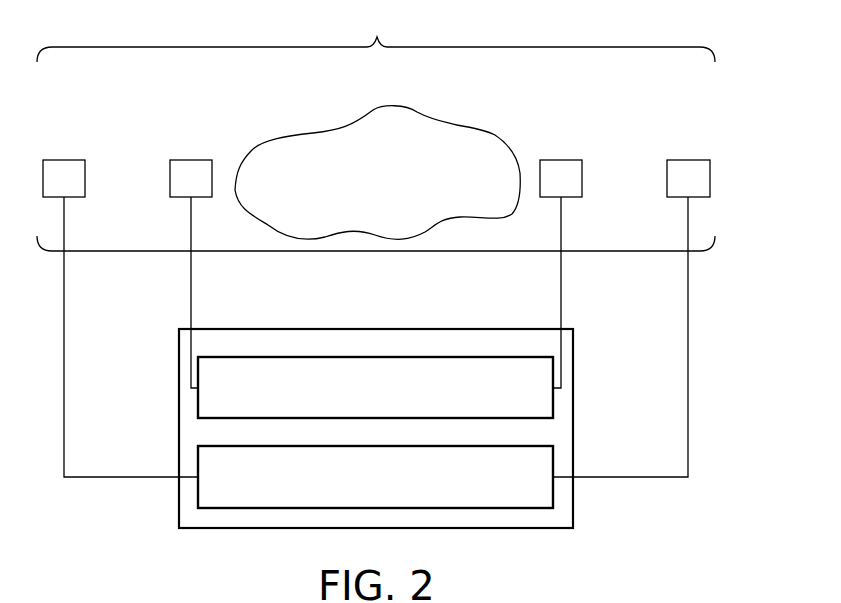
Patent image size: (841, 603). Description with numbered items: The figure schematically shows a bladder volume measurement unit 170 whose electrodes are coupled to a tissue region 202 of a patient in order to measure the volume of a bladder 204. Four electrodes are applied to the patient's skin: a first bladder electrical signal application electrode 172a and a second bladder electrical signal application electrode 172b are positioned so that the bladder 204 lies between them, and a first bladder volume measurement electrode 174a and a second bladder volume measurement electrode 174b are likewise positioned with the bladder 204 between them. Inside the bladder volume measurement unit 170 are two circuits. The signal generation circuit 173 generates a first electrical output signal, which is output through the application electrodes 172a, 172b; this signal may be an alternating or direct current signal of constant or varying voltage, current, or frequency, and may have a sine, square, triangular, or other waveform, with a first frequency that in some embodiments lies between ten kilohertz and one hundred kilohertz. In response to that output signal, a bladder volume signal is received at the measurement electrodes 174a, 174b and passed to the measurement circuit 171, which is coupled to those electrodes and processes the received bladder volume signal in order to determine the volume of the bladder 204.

The tissue region 202 is at (376, 129).
The bladder 204 is at (458, 124).
The first bladder electrical signal application electrode 172a is at (64, 160).
The second bladder electrical signal application electrode 172b is at (688, 160).
The first bladder volume measurement electrode 174a is at (191, 160).
The second bladder volume measurement electrode 174b is at (561, 160).
The bladder volume measurement unit 170 is at (257, 328).
The measurement circuit 171 is at (376, 356).
The signal generation circuit 173 is at (555, 489).